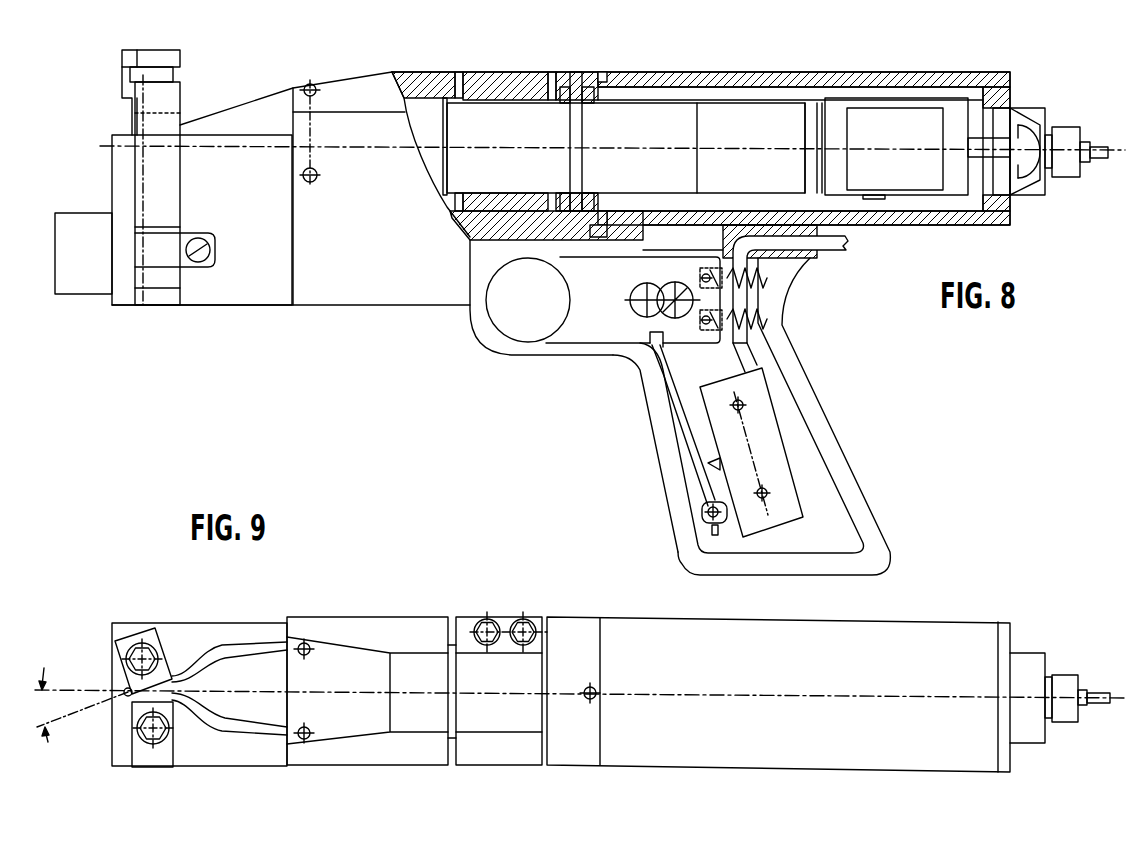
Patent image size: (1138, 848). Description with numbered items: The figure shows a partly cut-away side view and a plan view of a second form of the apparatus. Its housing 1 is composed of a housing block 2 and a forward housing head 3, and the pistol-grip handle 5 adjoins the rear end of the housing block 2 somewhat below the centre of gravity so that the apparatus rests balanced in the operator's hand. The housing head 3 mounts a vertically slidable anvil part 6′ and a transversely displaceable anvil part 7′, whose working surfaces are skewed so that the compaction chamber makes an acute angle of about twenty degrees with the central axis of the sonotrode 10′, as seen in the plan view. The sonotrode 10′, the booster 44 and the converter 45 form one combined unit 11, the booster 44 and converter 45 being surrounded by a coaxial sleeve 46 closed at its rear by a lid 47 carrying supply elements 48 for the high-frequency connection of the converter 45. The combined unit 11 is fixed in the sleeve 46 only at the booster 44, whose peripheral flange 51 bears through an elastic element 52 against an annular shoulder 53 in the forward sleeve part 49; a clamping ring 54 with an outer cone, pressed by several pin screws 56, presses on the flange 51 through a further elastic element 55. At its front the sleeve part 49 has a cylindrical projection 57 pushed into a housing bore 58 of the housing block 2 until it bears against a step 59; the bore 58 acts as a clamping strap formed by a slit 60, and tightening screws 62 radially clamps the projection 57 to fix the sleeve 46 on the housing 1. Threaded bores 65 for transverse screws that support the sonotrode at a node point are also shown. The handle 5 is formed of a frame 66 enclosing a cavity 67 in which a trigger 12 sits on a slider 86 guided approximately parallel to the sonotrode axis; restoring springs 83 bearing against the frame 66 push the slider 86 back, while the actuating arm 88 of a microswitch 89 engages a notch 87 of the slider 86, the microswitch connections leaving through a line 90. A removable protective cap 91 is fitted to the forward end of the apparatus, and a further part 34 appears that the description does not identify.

In FIG. 8, the housing 1 is at (306, 316).
In FIG. 9, the housing 1 is at (315, 606).
In FIG. 8, the housing block 2 is at (361, 306).
In FIG. 9, the housing block 2 is at (383, 617).
In FIG. 8, the housing head 3 is at (240, 306).
In FIG. 9, the housing head 3 is at (222, 624).
In FIG. 8, the handle 5 is at (856, 428).
In FIG. 8, the anvil part 6′ is at (152, 47).
In FIG. 9, the anvil part 6′ is at (133, 625).
In FIG. 8, the anvil part 7′ is at (186, 94).
In FIG. 9, the anvil part 7′ is at (188, 748).
In FIG. 8, the sonotrode 10′ is at (245, 110).
In FIG. 9, the sonotrode 10′ is at (270, 686).
In FIG. 8, the combined unit 11 is at (688, 95).
In FIG. 8, the trigger 12 is at (568, 297).
In FIG. 8, the bracket screw 34 is at (211, 252).
In FIG. 8, the booster 44 is at (499, 141).
In FIG. 8, the converter 45 is at (782, 141).
In FIG. 8, the sleeve 46 is at (791, 70).
In FIG. 9, the sleeve 46 is at (907, 613).
In FIG. 8, the lid 47 is at (1030, 108).
In FIG. 8, the supply elements 48 is at (1070, 122).
In FIG. 9, the supply elements 48 is at (1065, 668).
In FIG. 8, the forward sleeve part 49 is at (570, 80).
In FIG. 8, the peripheral flange 51 is at (584, 160).
In FIG. 8, the elastic element 52 is at (563, 103).
In FIG. 8, the annular shoulder 53 is at (562, 193).
In FIG. 8, the clamping ring 54 is at (596, 100).
In FIG. 8, the elastic element 55 is at (598, 200).
In FIG. 8, the pin screws 56 is at (603, 72).
In FIG. 9, the pin screws 56 is at (597, 691).
In FIG. 8, the cylindrical projection 57 is at (504, 72).
In FIG. 8, the housing bore 58 is at (462, 72).
In FIG. 8, the step 59 is at (540, 238).
In FIG. 8, the slit 60 is at (455, 72).
In FIG. 9, the slit 60 is at (458, 617).
In FIG. 9, the screws 62 is at (523, 617).
In FIG. 8, the threaded bores 65 is at (317, 91).
In FIG. 9, the threaded bores 65 is at (310, 652).
In FIG. 8, the frame 66 is at (650, 422).
In FIG. 8, the cavity 67 is at (832, 490).
In FIG. 8, the restoring springs 83 is at (789, 298).
In FIG. 8, the slider 86 is at (615, 305).
In FIG. 8, the notch 87 is at (665, 350).
In FIG. 8, the actuating arm 88 is at (684, 416).
In FIG. 8, the microswitch 89 is at (774, 445).
In FIG. 8, the line 90 is at (840, 250).
In FIG. 8, the protective cap 91 is at (80, 296).